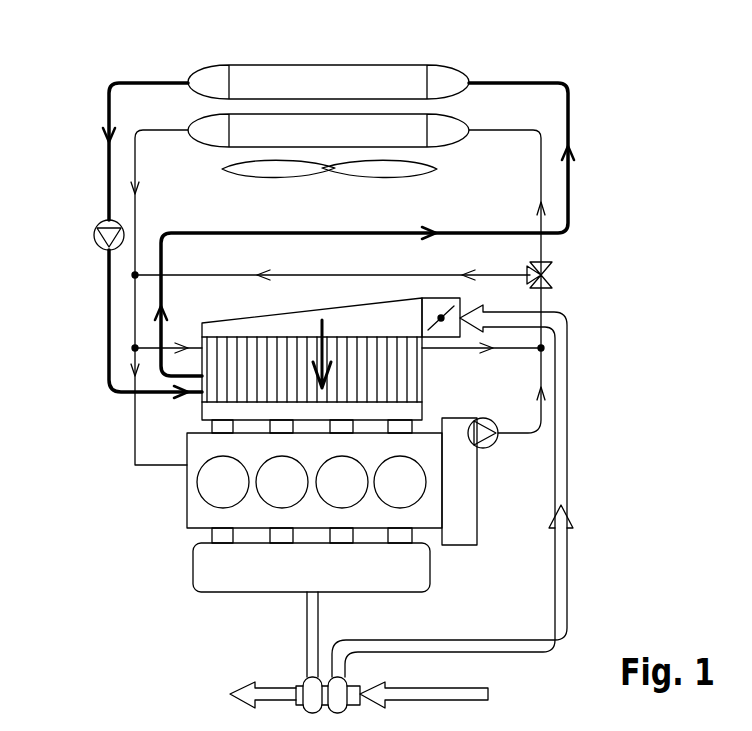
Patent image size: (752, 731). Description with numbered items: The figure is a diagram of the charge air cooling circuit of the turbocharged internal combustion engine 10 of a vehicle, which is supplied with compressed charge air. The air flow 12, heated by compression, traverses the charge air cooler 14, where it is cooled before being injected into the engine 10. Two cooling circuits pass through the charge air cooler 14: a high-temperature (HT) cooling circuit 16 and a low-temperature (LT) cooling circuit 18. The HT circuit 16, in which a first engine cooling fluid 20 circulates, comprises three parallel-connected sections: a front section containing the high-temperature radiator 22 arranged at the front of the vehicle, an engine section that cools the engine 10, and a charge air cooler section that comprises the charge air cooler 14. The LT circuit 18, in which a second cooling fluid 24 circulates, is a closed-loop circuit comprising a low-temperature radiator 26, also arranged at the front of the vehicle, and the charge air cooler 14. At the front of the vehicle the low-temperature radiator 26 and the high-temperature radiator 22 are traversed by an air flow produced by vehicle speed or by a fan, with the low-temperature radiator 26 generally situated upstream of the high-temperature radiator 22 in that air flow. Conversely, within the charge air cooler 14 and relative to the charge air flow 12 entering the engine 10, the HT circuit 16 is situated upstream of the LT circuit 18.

The internal combustion engine 10 is at (205, 513).
The air flow 12 is at (322, 332).
The charge air cooler 14 is at (233, 385).
The high-temperature cooling circuit 16 is at (135, 168).
The low-temperature cooling circuit 18 is at (109, 273).
The first engine cooling fluid 20 is at (135, 327).
The high-temperature radiator 22 is at (443, 134).
The second cooling fluid 24 is at (109, 364).
The low-temperature radiator 26 is at (445, 81).